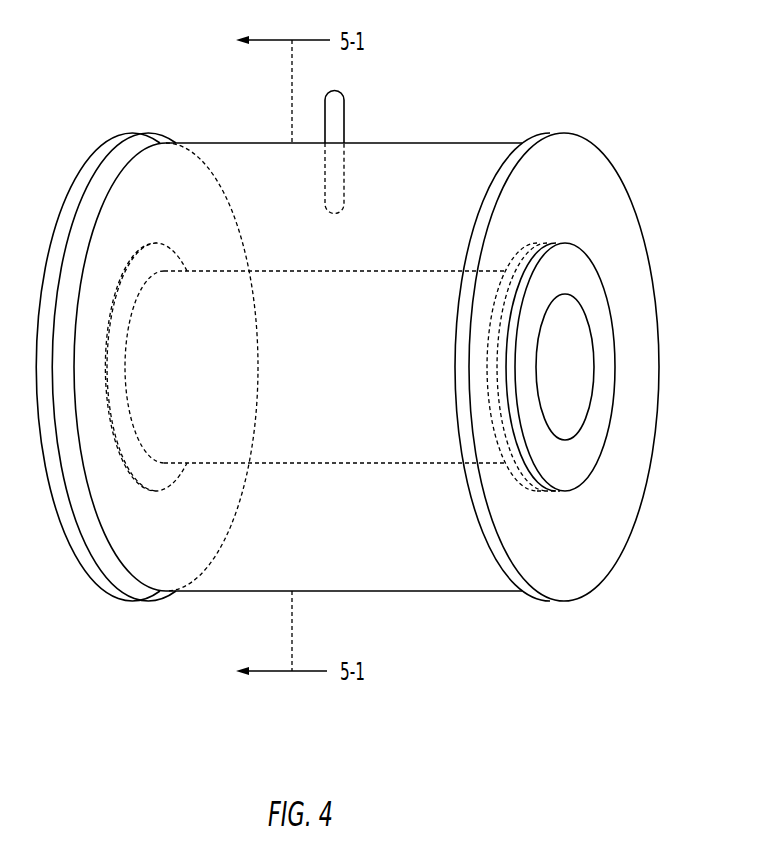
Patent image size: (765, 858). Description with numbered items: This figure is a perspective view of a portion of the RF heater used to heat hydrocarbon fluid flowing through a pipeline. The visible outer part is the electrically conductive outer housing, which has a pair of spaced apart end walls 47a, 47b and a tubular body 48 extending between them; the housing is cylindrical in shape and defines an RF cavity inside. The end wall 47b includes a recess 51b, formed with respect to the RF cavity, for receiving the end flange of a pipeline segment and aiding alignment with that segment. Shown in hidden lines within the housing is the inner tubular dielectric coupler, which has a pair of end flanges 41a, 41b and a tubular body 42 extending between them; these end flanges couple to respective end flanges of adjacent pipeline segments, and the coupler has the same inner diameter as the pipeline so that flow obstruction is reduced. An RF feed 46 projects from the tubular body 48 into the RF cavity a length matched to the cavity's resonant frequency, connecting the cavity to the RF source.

The tubular body 48 is at (425, 165).
The end wall 47a is at (100, 162).
The end wall 47b is at (605, 226).
The recess 51b is at (595, 443).
The end flange 41a is at (112, 432).
The end flange 41b is at (517, 480).
The tubular body 42 is at (387, 421).
The RF feed 46 is at (345, 113).